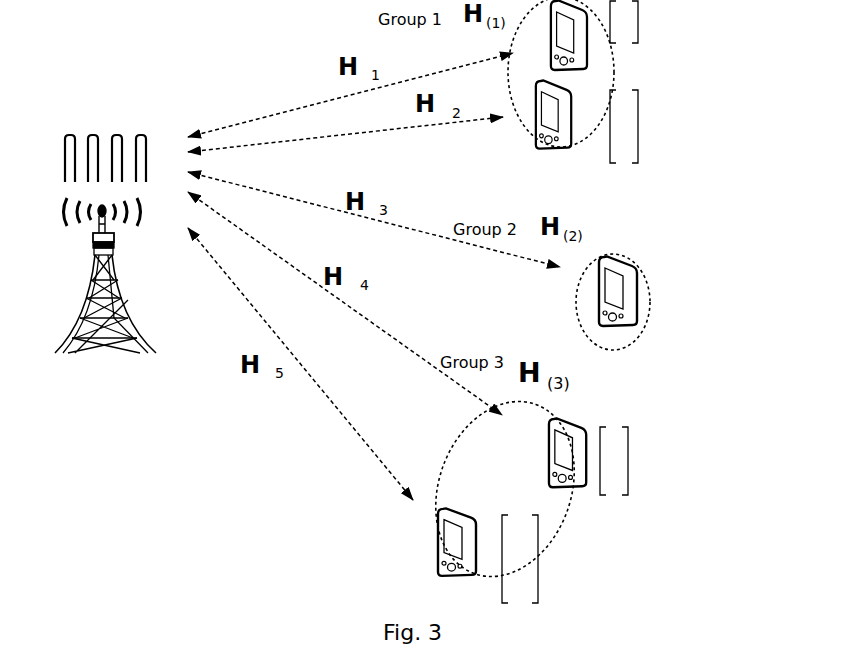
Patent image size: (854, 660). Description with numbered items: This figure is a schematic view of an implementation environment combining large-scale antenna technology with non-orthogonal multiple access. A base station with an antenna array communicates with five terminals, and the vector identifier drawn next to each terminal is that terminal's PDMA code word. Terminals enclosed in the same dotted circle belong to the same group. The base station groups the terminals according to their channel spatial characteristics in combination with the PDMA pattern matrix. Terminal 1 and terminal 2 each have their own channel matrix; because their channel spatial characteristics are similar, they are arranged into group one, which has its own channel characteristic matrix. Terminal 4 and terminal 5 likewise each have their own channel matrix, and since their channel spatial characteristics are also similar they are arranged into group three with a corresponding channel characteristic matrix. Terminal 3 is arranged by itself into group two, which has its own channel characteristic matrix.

The terminal 1 is at (630, 36).
The terminal 2 is at (618, 121).
The terminal 3 is at (665, 292).
The terminal 4 is at (621, 456).
The terminal 5 is at (448, 555).